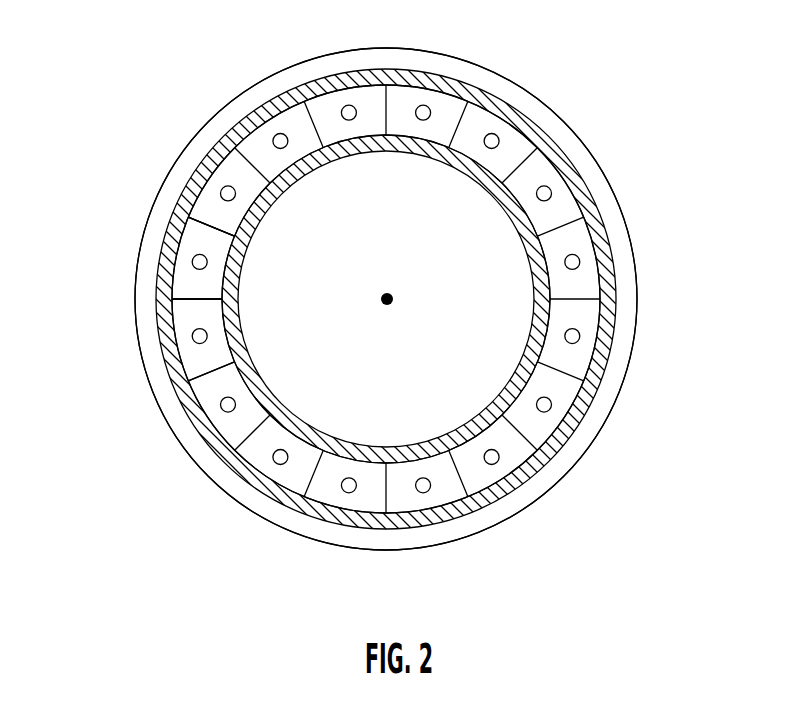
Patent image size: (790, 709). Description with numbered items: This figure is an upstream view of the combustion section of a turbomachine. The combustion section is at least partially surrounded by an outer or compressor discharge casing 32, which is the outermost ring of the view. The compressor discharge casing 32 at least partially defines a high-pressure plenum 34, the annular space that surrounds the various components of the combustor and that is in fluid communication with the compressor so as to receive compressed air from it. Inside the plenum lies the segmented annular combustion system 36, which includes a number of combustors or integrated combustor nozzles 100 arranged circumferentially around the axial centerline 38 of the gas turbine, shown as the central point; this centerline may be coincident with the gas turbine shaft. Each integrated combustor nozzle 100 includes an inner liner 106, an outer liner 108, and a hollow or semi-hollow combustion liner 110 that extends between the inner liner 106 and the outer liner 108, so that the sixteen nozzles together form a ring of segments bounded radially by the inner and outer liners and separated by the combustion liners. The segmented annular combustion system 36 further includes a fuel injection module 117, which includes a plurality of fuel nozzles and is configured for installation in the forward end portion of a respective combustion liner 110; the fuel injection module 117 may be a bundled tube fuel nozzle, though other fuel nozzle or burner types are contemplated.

The compressor discharge casing 32 is at (615, 183).
The high-pressure plenum 34 is at (400, 49).
The segmented annular combustion system 36 is at (546, 116).
The axial centerline 38 is at (388, 295).
The integrated combustor nozzle 100 is at (243, 108).
The inner liner 106 is at (245, 270).
The outer liner 108 is at (163, 258).
The combustion liner 110 is at (198, 216).
The fuel injection module 117 is at (260, 460).